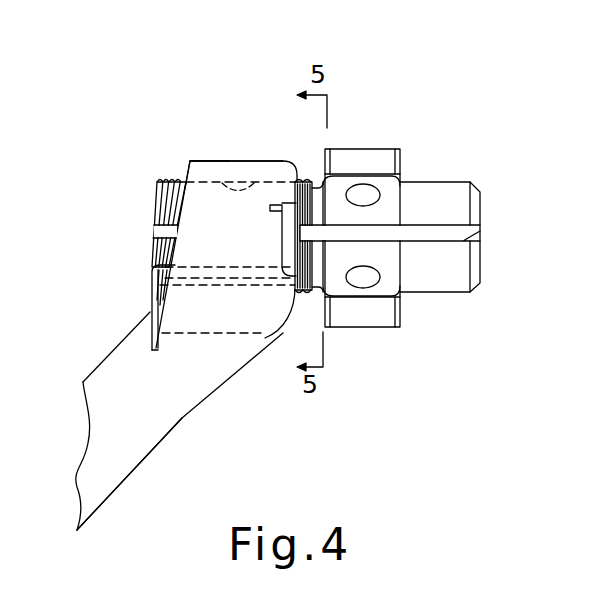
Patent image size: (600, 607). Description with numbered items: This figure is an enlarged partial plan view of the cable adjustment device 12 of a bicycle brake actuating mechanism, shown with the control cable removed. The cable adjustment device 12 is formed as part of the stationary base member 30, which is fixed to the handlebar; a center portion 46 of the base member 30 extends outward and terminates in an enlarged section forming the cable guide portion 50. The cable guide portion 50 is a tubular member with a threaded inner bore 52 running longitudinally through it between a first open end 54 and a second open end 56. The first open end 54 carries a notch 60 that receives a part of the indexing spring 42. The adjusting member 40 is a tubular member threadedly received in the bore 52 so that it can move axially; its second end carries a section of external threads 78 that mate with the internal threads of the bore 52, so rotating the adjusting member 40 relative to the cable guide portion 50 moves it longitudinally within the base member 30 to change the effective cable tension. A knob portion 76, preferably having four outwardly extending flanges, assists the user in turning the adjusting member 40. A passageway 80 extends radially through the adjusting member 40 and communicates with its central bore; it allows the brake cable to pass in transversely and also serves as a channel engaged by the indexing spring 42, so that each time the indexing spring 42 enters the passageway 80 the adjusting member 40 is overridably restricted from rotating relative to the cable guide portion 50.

The cable adjustment device 12 is at (278, 109).
The base member 30 is at (182, 415).
The adjusting member 40 is at (426, 181).
The indexing spring 42 is at (151, 267).
The center portion 46 is at (113, 468).
The cable guide portion 50 is at (213, 160).
The threaded inner bore 52 is at (246, 182).
The first open end 54 is at (297, 180).
The second open end 56 is at (188, 170).
The notch 60 is at (284, 277).
The knob portion 76 is at (364, 150).
The external threads 78 is at (158, 183).
The passageway 80 is at (463, 240).